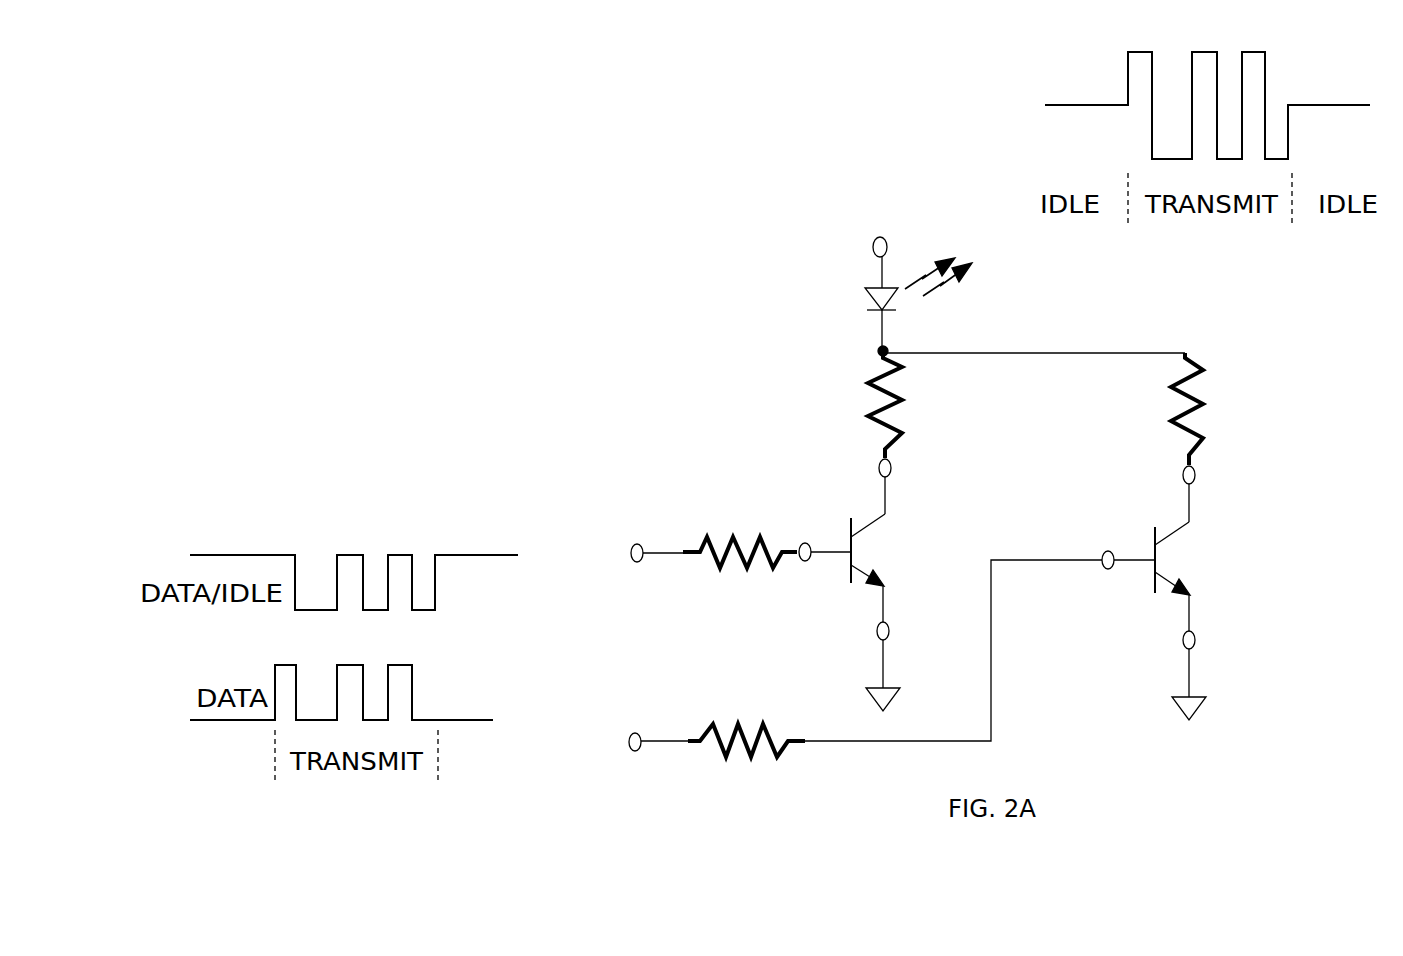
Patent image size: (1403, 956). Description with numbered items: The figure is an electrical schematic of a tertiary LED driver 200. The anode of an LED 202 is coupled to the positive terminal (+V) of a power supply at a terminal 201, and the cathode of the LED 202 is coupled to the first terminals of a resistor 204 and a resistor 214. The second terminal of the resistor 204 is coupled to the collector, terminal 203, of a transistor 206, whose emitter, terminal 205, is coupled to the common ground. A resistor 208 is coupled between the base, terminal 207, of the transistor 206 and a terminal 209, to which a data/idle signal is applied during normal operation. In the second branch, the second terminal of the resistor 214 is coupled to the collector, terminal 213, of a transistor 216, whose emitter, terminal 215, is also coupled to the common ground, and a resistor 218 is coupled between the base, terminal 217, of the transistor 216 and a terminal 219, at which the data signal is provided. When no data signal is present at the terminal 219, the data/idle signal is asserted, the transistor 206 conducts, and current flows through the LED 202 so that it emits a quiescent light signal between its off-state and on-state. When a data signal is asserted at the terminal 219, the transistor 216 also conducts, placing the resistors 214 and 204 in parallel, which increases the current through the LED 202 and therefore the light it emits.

The tertiary LED driver 200 is at (745, 383).
The terminal 201 is at (873, 242).
The LED 202 is at (870, 303).
The collector terminal 203 is at (892, 470).
The resistor 204 is at (905, 421).
The emitter terminal 205 is at (890, 632).
The transistor 206 is at (870, 563).
The base terminal 207 is at (805, 542).
The resistor 208 is at (760, 534).
The terminal 209 is at (638, 543).
The collector terminal 213 is at (1196, 476).
The resistor 214 is at (1207, 429).
The emitter terminal 215 is at (1196, 641).
The transistor 216 is at (1174, 573).
The base terminal 217 is at (1116, 550).
The resistor 218 is at (765, 722).
The terminal 219 is at (632, 733).